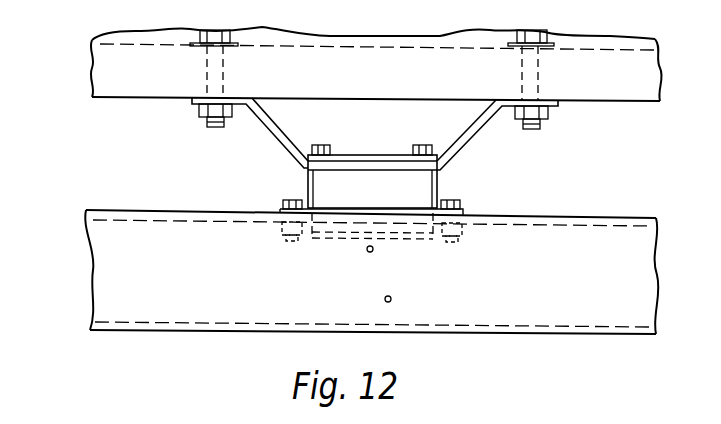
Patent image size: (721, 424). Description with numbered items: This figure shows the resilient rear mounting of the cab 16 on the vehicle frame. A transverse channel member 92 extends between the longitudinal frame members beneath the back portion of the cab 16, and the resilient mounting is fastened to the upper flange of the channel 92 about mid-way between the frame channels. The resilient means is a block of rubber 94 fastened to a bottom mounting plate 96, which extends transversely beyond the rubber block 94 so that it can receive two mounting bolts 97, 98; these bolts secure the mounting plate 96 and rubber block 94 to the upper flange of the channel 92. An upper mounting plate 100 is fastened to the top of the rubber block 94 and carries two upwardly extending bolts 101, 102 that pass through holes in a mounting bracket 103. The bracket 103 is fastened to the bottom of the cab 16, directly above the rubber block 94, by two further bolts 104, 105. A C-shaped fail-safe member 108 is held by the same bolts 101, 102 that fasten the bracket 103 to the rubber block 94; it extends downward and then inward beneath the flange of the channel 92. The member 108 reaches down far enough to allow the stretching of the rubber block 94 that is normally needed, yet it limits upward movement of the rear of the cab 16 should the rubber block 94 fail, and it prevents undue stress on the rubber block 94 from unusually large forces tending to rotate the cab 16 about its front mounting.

The cab 16 is at (661, 70).
The transverse channel member 92 is at (601, 234).
The rubber block 94 is at (372, 204).
The bottom mounting plate 96 is at (463, 211).
The mounting bolt 97 is at (282, 200).
The mounting bolt 98 is at (450, 200).
The upper mounting plate 100 is at (372, 175).
The upwardly extending bolt 101 is at (320, 144).
The upwardly extending bolt 102 is at (420, 144).
The mounting bracket 103 is at (480, 132).
The bolt 104 is at (228, 28).
The bolt 105 is at (543, 33).
The C-shaped fail-safe member 108 is at (357, 240).